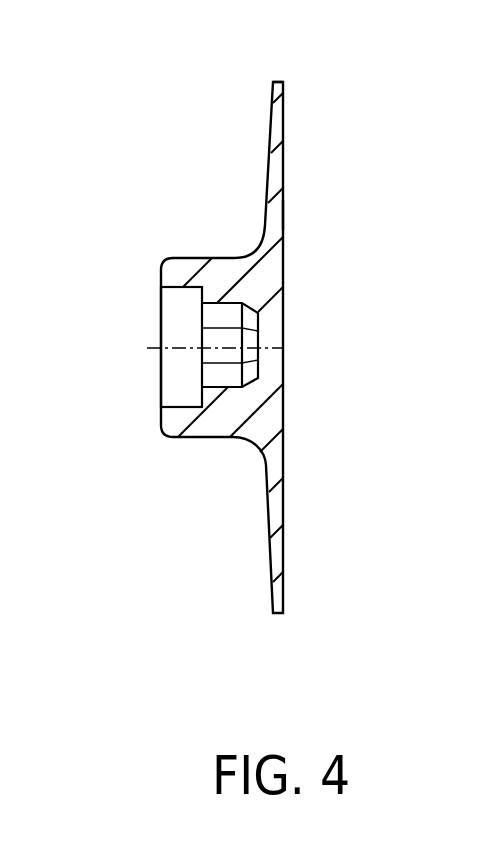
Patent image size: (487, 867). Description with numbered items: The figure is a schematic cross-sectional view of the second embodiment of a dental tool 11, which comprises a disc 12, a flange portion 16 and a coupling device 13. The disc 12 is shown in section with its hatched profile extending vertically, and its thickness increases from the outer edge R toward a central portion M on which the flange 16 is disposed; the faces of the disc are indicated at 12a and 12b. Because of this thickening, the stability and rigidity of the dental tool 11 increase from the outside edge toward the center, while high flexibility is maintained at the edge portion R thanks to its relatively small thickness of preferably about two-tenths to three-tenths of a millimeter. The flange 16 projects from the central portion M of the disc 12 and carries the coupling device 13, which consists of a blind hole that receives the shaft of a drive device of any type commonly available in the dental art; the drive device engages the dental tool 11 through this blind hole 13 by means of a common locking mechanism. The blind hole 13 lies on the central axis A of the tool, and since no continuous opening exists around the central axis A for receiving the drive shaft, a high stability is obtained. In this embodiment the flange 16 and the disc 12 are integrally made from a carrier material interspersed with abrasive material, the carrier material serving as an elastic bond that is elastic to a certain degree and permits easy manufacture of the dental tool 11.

The dental tool 11 is at (274, 321).
The disc 12 is at (304, 347).
The outer surface of flange 12a is at (283, 442).
The inner surface of flange 12b is at (270, 538).
The coupling device 13 is at (176, 318).
The flange portion 16 is at (226, 268).
The central axis A is at (283, 349).
The edge R is at (284, 82).
The central portion M is at (283, 213).